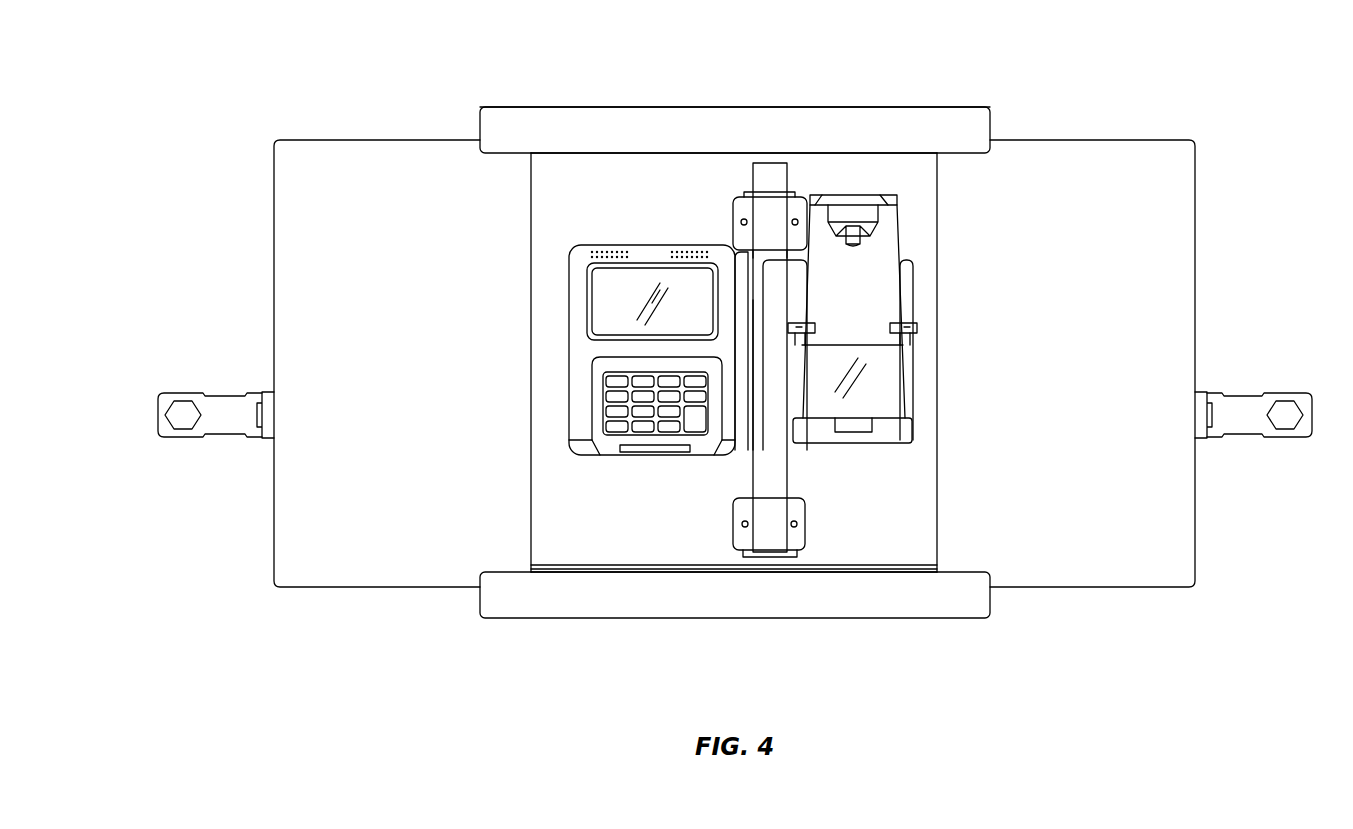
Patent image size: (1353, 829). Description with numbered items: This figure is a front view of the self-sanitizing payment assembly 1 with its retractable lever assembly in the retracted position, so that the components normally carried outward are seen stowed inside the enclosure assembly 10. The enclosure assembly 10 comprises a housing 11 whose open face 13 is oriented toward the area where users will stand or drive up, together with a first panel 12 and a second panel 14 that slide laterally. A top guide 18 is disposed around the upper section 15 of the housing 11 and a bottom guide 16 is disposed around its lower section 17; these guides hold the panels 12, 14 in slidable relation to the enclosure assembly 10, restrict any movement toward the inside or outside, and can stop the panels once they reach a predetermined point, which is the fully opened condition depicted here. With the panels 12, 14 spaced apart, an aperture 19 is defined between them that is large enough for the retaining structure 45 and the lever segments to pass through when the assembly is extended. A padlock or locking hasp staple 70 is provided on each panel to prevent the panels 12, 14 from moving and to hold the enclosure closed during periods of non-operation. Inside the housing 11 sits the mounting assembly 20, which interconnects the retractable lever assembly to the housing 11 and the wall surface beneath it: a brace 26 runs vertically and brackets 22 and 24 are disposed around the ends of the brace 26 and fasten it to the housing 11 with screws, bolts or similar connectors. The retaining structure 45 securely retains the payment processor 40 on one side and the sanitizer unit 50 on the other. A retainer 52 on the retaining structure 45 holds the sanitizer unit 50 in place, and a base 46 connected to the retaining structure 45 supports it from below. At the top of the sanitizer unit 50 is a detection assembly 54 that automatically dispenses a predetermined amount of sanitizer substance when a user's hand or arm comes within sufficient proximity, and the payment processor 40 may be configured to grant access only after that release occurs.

The self-sanitizing payment assembly 1 is at (252, 86).
The enclosure assembly 10 is at (486, 123).
The housing 11 is at (612, 175).
The first panel 12 is at (303, 275).
The open face 13 is at (880, 546).
The second panel 14 is at (1190, 152).
The upper section 15 is at (729, 133).
The bottom guide 16 is at (849, 601).
The lower section 17 is at (728, 572).
The top guide 18 is at (946, 127).
The aperture 19 is at (895, 493).
The mounting assembly 20 is at (733, 530).
The bracket 22 is at (797, 212).
The bracket 24 is at (800, 512).
The brace 26 is at (765, 474).
The payment processor 40 is at (617, 252).
The retaining structure 45 is at (786, 280).
The base 46 is at (872, 443).
The sanitizer unit 50 is at (890, 288).
The retainer 52 is at (892, 328).
The detection assembly 54 is at (865, 238).
The padlock or locking hasp staple 70 is at (265, 442).